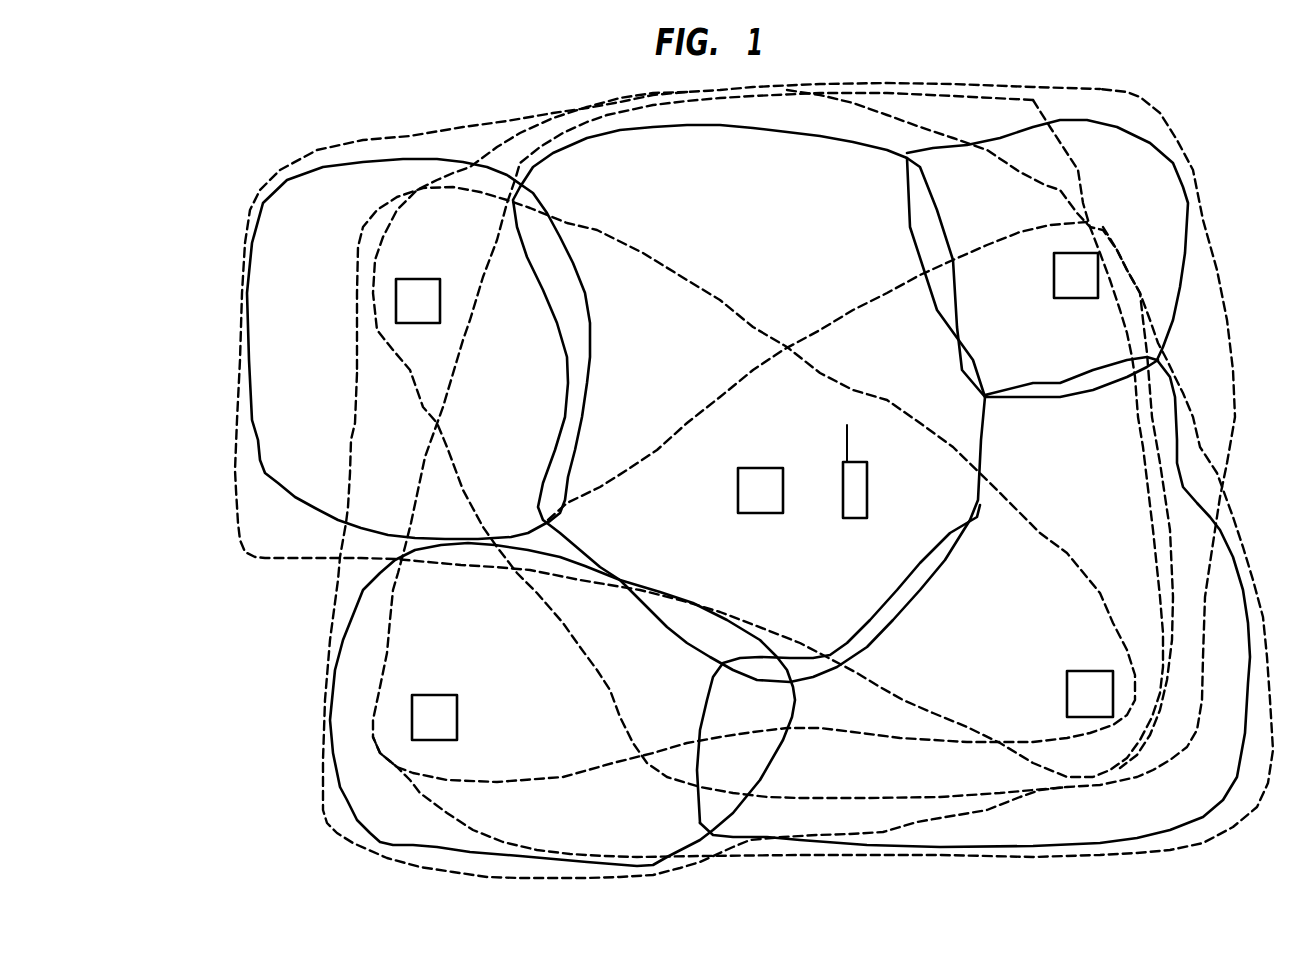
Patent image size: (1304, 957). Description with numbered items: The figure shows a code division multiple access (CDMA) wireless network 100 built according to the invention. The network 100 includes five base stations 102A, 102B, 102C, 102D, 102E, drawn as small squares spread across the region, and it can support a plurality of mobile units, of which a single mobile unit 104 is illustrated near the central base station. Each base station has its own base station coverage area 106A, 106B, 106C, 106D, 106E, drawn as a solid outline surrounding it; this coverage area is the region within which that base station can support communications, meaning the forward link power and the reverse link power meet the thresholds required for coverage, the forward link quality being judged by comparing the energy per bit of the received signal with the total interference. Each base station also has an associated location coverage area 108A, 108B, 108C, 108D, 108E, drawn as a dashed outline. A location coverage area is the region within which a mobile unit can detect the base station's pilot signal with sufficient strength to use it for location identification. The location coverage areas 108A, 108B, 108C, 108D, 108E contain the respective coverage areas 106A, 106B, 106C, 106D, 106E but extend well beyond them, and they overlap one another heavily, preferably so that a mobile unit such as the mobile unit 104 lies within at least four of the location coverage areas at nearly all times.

The CDMA wireless network 100 is at (232, 87).
The base station 102A is at (427, 278).
The base station 102B is at (441, 694).
The base station 102C is at (1072, 298).
The base station 102D is at (1075, 670).
The base station 102E is at (768, 468).
The mobile unit 104 is at (867, 478).
The base station coverage area 106A is at (312, 508).
The base station coverage area 106B is at (369, 835).
The base station coverage area 106C is at (1178, 312).
The base station coverage area 106D is at (707, 700).
The base station coverage area 106E is at (808, 137).
The location coverage area 108A is at (407, 134).
The location coverage area 108B is at (328, 657).
The location coverage area 108C is at (1180, 146).
The location coverage area 108D is at (1170, 852).
The location coverage area 108E is at (633, 113).